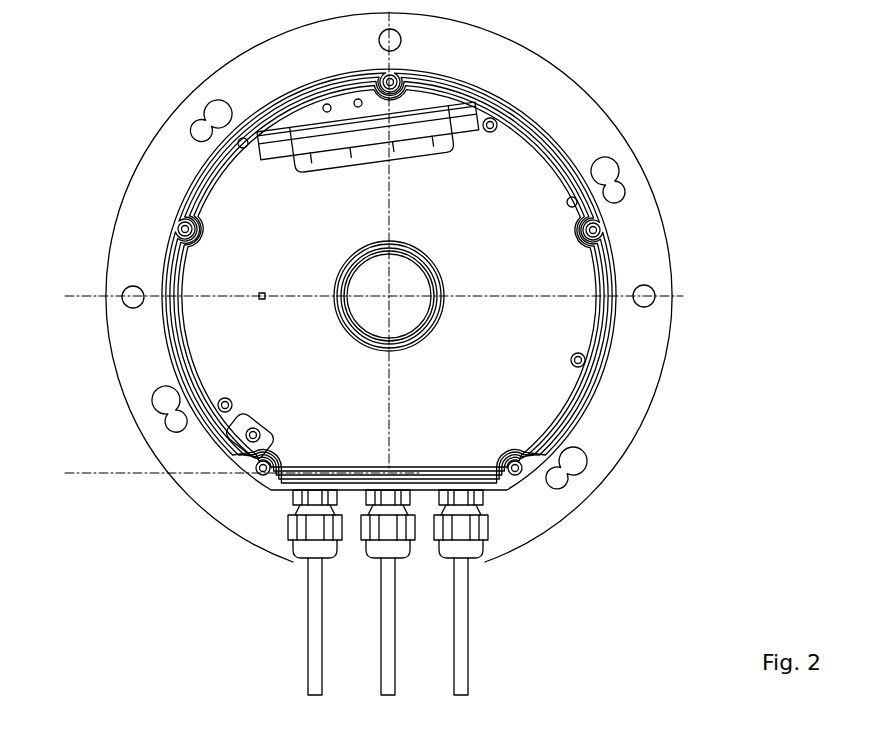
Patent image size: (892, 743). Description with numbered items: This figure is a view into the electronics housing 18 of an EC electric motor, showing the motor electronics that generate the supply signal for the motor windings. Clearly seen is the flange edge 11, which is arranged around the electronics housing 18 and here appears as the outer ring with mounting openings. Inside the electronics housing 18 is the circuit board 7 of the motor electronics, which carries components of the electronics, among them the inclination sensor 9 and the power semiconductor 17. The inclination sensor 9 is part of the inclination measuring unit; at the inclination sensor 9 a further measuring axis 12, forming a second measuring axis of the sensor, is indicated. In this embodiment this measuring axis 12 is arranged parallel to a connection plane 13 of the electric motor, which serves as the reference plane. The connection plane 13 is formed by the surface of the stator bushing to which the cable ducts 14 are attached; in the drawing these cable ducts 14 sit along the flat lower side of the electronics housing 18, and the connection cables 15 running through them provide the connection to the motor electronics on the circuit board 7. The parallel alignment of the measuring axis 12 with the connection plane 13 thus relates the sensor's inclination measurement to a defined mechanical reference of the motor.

The circuit board 7 is at (557, 265).
The inclination sensor 9 is at (262, 292).
The flange edge 11 is at (258, 82).
The further measuring axis 12 is at (100, 292).
The connection plane 13 is at (100, 472).
The cable ducts 14 is at (465, 552).
The connection cable 15 is at (465, 635).
The power semiconductor 17 is at (360, 137).
The electronics housing 18 is at (187, 202).